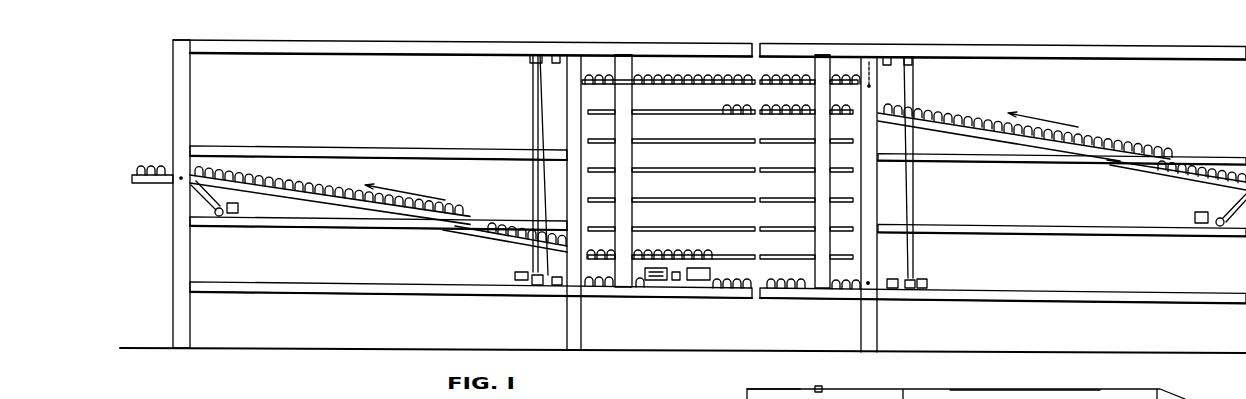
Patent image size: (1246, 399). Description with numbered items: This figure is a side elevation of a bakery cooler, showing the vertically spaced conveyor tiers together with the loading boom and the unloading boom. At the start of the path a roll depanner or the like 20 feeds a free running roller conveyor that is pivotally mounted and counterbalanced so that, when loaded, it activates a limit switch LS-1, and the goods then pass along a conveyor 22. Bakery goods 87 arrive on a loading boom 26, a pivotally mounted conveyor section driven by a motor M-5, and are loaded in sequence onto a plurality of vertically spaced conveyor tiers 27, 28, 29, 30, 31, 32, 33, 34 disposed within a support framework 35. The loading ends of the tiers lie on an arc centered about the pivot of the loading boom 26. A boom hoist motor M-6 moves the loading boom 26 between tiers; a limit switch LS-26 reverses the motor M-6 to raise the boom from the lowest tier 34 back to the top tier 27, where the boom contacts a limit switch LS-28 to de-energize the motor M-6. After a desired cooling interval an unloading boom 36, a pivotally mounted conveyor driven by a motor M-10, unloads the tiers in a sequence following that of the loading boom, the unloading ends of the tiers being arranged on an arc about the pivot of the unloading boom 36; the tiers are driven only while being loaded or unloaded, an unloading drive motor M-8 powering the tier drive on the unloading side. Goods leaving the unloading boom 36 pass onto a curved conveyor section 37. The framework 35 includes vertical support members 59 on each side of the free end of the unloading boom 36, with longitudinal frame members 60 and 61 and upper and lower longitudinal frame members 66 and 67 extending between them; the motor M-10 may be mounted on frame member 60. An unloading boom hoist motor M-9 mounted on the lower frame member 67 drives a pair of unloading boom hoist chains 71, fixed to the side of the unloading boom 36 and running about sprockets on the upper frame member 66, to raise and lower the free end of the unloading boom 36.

The upper longitudinal frame member 66 is at (333, 41).
The support framework 35 is at (654, 41).
The bakery goods 87 is at (790, 67).
The limit switch LS-28 is at (895, 35).
The vertical support member 59 is at (567, 104).
The longitudinal frame member 61 is at (348, 148).
The unloading boom 36 is at (326, 196).
The unloading boom hoist chain 71 is at (532, 184).
The curved conveyor section 37 is at (155, 187).
The motor M-10 is at (250, 214).
The longitudinal frame member 60 is at (335, 228).
The lower longitudinal frame member 67 is at (334, 298).
The unloading boom hoist motor M-9 is at (514, 276).
The unloading drive motor M-8 is at (656, 282).
The conveyor tier 34 is at (756, 298).
The conveyor tier 27 is at (687, 88).
The conveyor tier 28 is at (693, 118).
The conveyor tier 29 is at (693, 145).
The conveyor tier 30 is at (696, 173).
The conveyor tier 31 is at (699, 203).
The conveyor tier 32 is at (750, 228).
The conveyor tier 33 is at (759, 257).
The boom hoist motor M-6 is at (926, 284).
The limit switch LS-26 is at (877, 295).
The loading boom 26 is at (1162, 176).
The motor M-5 is at (1195, 216).
The roll depanner 20 is at (782, 388).
The limit switch LS-1 is at (848, 368).
The conveyor 22 is at (1012, 390).